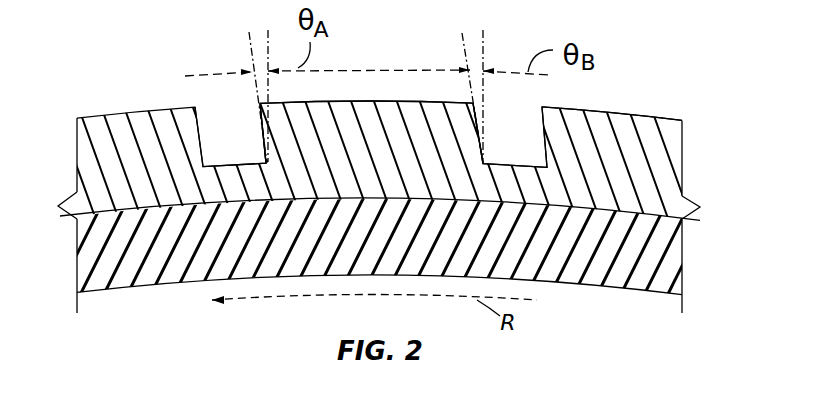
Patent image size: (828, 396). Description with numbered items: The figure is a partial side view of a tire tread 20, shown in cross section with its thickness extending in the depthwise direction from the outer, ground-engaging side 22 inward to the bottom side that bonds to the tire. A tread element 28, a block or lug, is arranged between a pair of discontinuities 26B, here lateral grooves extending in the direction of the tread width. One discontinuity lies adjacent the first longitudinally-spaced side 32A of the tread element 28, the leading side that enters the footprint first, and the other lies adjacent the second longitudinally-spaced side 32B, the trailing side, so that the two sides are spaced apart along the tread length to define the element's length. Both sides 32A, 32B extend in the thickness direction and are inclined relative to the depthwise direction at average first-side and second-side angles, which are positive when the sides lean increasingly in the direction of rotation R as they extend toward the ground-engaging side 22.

The tread 20 is at (666, 165).
The outer, ground-engaging side 22 is at (643, 117).
The pair of discontinuities 26B is at (237, 164).
The tread element 28 is at (357, 101).
The first longitudinally-spaced side 32A is at (260, 117).
The second longitudinally-spaced side 32B is at (480, 118).